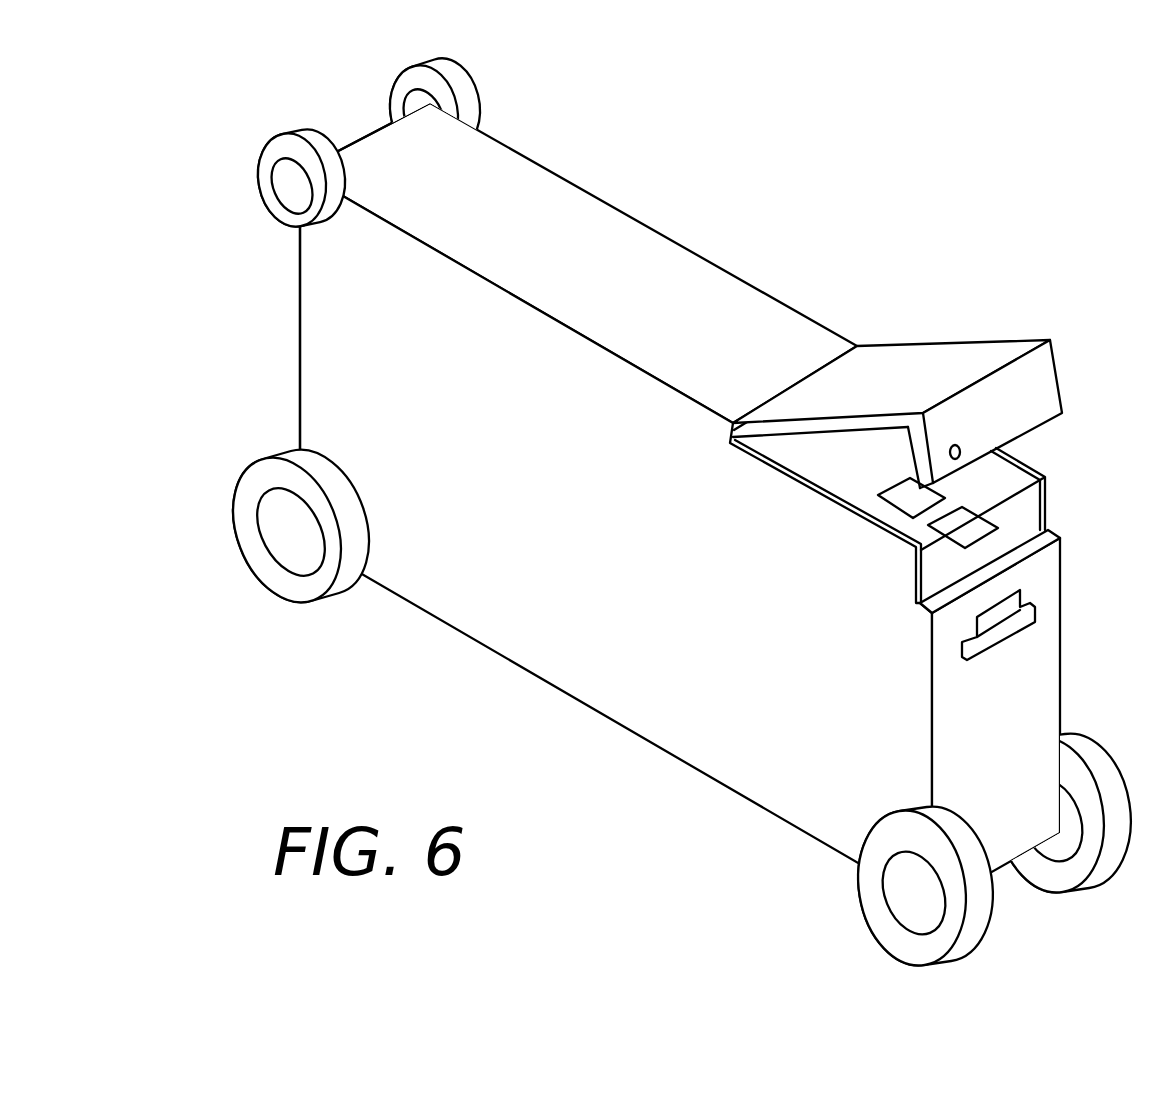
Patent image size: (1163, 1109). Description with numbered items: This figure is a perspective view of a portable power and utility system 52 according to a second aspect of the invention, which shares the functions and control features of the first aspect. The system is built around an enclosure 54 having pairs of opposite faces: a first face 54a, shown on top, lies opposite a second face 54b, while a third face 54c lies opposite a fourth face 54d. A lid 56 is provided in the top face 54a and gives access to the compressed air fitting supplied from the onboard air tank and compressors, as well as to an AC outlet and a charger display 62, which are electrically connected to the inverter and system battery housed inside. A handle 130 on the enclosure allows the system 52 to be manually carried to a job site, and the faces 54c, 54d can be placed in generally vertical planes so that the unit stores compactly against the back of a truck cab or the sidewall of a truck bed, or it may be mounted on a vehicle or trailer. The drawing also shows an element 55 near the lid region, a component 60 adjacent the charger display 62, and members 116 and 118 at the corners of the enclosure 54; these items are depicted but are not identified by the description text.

The portable power and utility system 52 is at (671, 516).
The enclosure 54 is at (680, 504).
The first face 54a is at (680, 320).
The second face 54b is at (605, 718).
The third face 54c is at (1028, 775).
The fourth face 54d is at (405, 322).
The rear plate 55 is at (1046, 481).
The lid 56 is at (1050, 340).
The mounting pad 60 is at (878, 502).
The charger display 62 is at (918, 562).
The rear wheel 116 is at (317, 607).
The front wheel 118 is at (395, 83).
The handle 130 is at (972, 665).